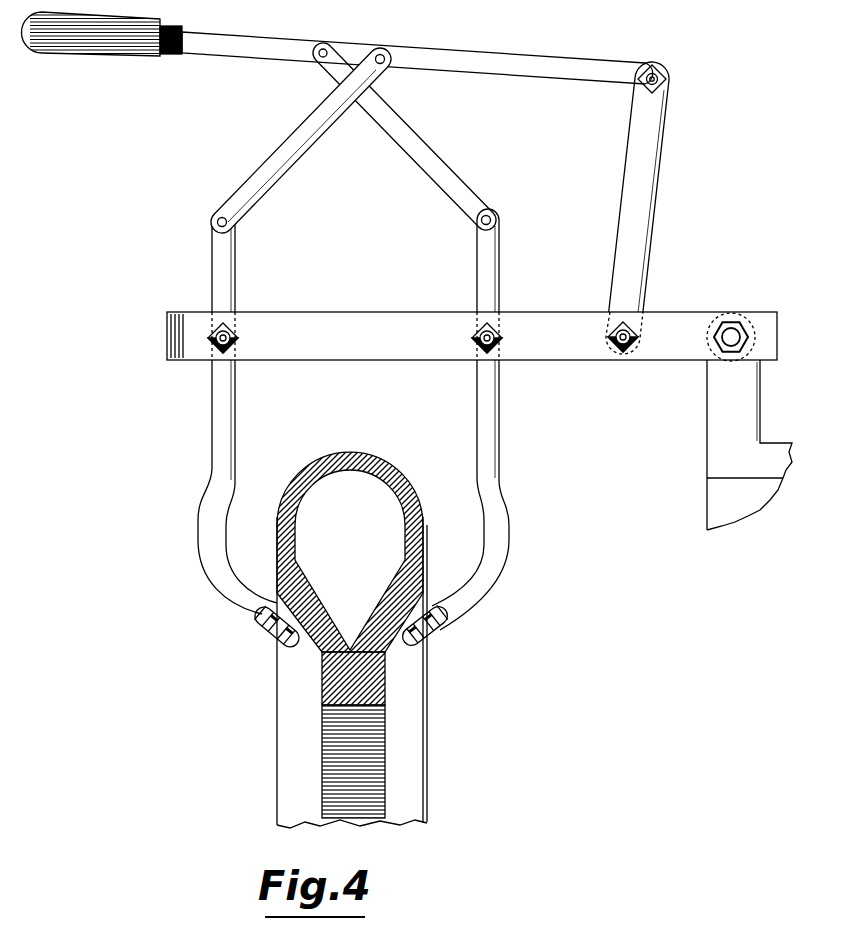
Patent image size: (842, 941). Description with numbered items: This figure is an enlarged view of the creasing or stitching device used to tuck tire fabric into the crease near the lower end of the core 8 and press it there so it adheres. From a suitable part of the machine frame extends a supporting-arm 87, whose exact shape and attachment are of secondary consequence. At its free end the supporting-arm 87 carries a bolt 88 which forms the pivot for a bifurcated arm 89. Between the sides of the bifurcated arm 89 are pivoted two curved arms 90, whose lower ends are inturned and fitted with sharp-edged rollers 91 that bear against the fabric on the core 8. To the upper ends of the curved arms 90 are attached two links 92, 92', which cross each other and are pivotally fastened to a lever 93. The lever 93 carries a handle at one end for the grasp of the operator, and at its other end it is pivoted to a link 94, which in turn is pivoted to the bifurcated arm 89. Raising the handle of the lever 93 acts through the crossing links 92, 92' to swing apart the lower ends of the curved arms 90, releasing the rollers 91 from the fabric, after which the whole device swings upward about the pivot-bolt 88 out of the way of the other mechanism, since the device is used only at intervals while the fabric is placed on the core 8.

The core 8 is at (352, 640).
The supporting-arm 87 is at (749, 445).
The bolt 88 is at (735, 311).
The bifurcated arm 89 is at (472, 336).
The curved arms 90 is at (236, 292).
The sharp-edged rollers 91 is at (258, 633).
The link 92 is at (390, 136).
The link 92' is at (314, 140).
The lever 93 is at (496, 51).
The link 94 is at (660, 202).